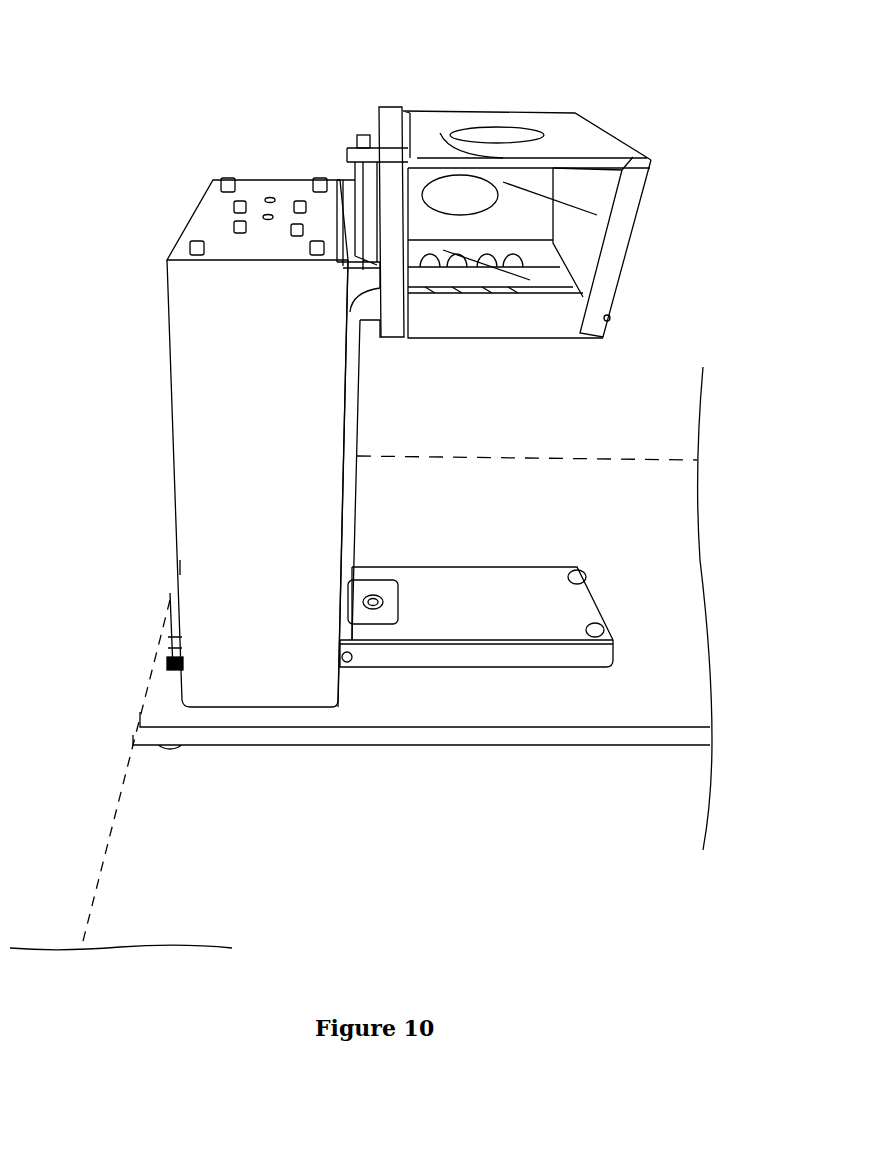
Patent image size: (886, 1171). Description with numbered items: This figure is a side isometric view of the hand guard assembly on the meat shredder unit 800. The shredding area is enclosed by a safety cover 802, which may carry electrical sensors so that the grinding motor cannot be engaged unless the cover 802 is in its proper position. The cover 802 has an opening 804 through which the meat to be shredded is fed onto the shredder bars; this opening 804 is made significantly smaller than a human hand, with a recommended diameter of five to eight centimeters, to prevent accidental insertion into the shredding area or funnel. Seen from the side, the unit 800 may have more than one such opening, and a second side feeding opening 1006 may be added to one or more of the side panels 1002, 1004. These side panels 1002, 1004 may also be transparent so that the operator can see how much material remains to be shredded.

The unit 800 is at (740, 152).
The cover 802 is at (568, 148).
The opening 804 is at (517, 128).
The side panel 1002 is at (582, 188).
The side panel 1004 is at (575, 240).
The second side feeding opening 1006 is at (442, 193).